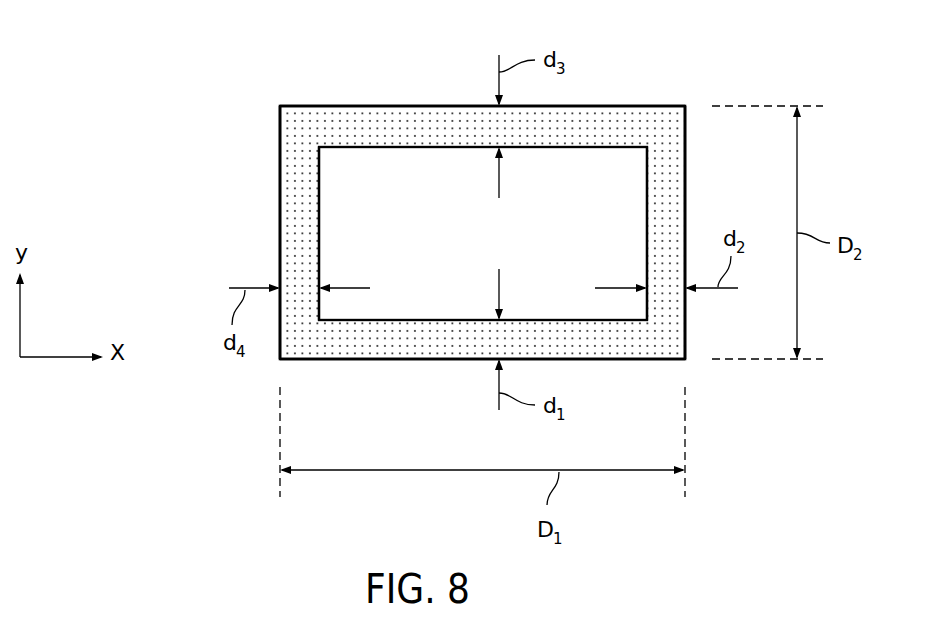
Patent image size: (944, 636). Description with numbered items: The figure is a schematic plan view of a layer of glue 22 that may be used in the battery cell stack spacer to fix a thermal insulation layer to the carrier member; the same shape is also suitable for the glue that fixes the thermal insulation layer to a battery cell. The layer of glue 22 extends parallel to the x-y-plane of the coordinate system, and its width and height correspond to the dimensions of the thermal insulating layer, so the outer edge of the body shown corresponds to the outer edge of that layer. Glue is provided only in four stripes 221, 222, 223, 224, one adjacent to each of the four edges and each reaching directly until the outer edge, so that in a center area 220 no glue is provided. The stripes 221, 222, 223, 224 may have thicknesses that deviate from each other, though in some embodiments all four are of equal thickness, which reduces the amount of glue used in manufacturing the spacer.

The layer of glue 22 is at (238, 66).
The center area 220 is at (580, 168).
The stripe 221 is at (441, 360).
The stripe 222 is at (685, 160).
The stripe 223 is at (420, 106).
The stripe 224 is at (280, 189).